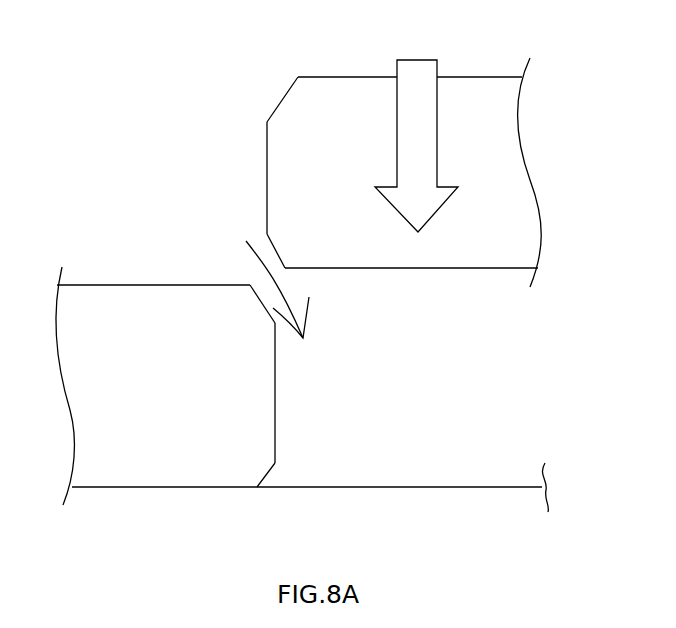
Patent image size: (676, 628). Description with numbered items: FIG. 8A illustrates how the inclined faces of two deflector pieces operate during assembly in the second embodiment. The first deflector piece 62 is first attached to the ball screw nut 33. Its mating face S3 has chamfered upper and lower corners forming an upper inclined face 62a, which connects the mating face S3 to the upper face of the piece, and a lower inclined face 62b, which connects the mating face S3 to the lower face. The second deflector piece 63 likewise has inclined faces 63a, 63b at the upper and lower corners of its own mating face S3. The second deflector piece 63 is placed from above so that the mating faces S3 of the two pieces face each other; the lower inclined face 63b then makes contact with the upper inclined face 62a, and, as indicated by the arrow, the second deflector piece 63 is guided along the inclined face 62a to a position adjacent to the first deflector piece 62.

The second deflector piece 63 is at (484, 77).
The inclined face 63a is at (284, 80).
The inclined face 63b is at (266, 260).
The mating face S3 is at (268, 180).
The first deflector piece 62 is at (115, 285).
The upper inclined face 62a is at (257, 292).
The lower inclined face 62b is at (267, 478).
The ball screw nut 33 is at (405, 527).